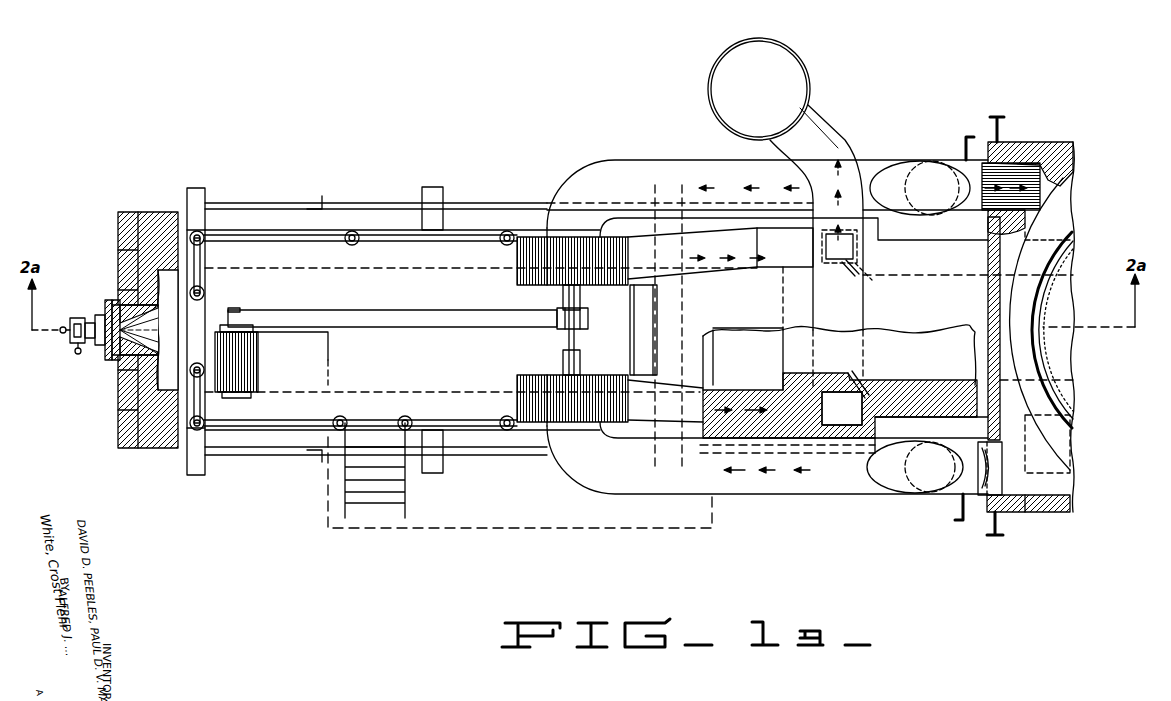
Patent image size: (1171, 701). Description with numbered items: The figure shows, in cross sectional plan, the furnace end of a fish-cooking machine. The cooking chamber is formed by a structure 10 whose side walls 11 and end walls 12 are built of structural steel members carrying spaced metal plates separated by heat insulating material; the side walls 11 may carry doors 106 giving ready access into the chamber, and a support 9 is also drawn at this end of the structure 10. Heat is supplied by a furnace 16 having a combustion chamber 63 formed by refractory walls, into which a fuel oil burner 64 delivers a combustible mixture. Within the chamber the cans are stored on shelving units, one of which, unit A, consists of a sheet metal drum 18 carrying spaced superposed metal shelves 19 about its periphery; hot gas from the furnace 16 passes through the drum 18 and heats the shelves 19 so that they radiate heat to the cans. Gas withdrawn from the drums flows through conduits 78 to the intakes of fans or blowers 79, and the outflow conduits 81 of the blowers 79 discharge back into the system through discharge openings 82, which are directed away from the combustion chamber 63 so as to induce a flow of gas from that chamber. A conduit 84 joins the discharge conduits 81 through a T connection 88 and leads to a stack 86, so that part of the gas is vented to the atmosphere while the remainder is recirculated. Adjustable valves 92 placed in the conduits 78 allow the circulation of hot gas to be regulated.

The support 9 is at (962, 215).
The structure 10 is at (1080, 182).
The side walls 11 is at (1022, 513).
The end walls 12 is at (988, 290).
The furnace 16 is at (340, 226).
The drum 18 is at (1038, 348).
The shelves 19 is at (1066, 214).
The combustion chamber 63 is at (165, 372).
The fuel oil burner 64 is at (76, 317).
The conduits 78 is at (878, 161).
The fans or blowers 79 is at (516, 279).
The outflow conduits 81 is at (733, 266).
The discharge openings 82 is at (864, 262).
The conduit 84 is at (842, 327).
The stack 86 is at (803, 62).
The T connection 88 is at (785, 268).
The adjustable valves 92 is at (990, 462).
The doors 106 is at (1065, 513).
The unit A is at (1056, 264).